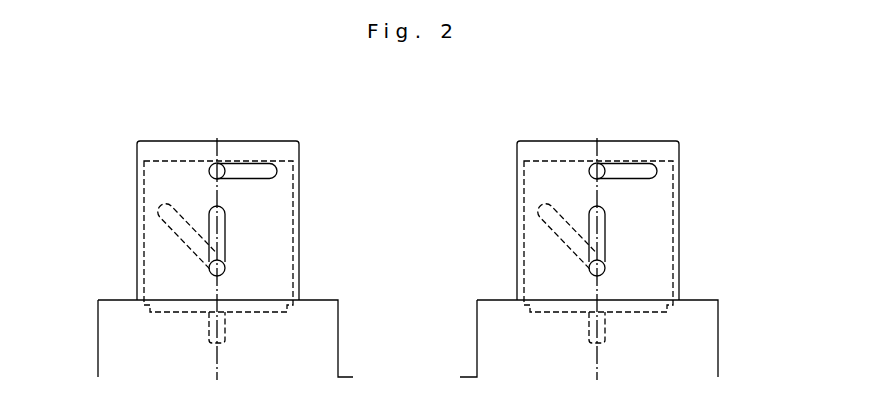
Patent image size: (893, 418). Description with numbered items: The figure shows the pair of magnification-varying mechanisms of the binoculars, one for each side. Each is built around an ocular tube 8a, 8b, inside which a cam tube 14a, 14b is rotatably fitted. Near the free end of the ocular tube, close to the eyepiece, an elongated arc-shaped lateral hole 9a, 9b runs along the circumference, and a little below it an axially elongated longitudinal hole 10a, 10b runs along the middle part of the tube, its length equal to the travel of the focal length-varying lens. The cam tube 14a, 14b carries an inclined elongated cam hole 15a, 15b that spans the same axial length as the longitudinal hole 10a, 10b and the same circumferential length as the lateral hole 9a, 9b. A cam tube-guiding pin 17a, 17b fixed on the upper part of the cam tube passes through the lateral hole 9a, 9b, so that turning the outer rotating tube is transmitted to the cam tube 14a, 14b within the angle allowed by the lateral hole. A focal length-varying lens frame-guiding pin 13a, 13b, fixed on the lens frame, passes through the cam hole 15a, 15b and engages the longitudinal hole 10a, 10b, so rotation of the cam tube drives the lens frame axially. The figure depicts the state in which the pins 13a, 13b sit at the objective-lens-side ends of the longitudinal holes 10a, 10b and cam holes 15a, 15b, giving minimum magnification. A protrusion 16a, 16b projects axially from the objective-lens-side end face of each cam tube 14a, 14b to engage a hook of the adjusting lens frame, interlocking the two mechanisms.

The ocular tube 8a is at (677, 238).
The ocular tube 8b is at (297, 237).
The lateral hole 9a is at (630, 172).
The lateral hole 9b is at (250, 170).
The longitudinal hole 10a is at (600, 235).
The longitudinal hole 10b is at (220, 233).
The focal length-varying lens frame-guiding pin 13a is at (590, 270).
The focal length-varying lens frame-guiding pin 13b is at (210, 268).
The cam tube 14a is at (670, 187).
The cam tube 14b is at (290, 185).
The cam hole 15a is at (550, 228).
The cam hole 15b is at (170, 225).
The protrusion 16a is at (603, 330).
The protrusion 16b is at (210, 328).
The cam tube-guiding pin 17a is at (593, 168).
The cam tube-guiding pin 17b is at (212, 165).